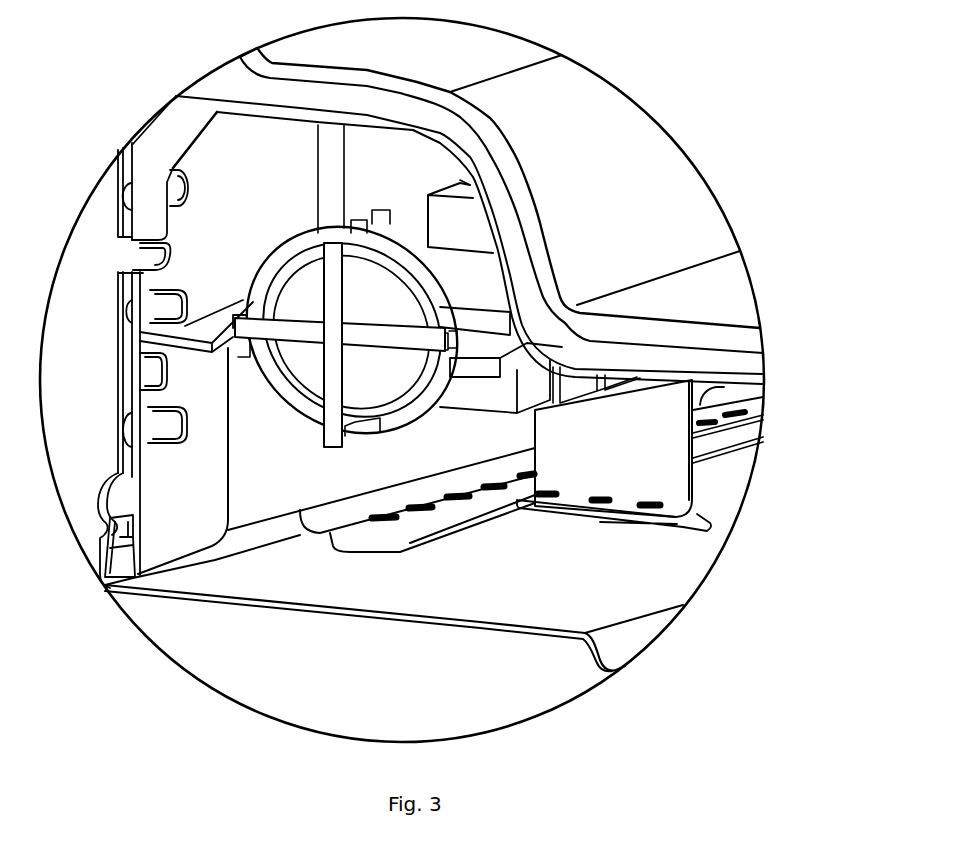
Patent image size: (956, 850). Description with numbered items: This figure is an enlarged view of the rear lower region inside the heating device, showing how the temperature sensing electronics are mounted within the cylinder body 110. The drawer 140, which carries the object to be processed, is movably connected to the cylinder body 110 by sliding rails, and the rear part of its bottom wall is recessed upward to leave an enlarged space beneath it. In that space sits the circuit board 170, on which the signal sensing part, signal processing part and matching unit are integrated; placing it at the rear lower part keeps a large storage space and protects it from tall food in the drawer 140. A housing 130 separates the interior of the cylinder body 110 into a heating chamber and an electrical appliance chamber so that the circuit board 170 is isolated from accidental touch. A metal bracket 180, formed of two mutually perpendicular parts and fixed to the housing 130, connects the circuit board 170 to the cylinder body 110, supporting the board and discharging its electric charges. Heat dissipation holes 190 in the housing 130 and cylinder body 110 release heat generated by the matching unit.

The cylinder body 110 is at (457, 590).
The housing 130 is at (718, 357).
The drawer 140 is at (692, 212).
The circuit board 170 is at (360, 338).
The metal bracket 180 is at (632, 477).
The heat dissipation holes 190 is at (135, 369).